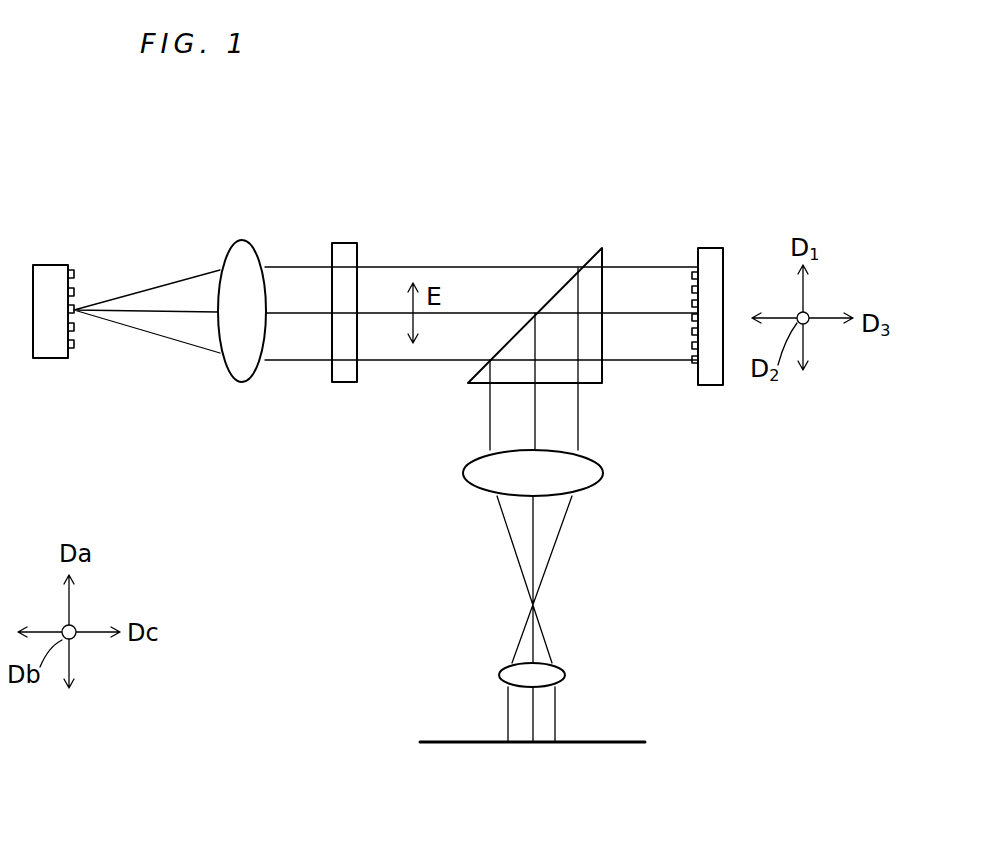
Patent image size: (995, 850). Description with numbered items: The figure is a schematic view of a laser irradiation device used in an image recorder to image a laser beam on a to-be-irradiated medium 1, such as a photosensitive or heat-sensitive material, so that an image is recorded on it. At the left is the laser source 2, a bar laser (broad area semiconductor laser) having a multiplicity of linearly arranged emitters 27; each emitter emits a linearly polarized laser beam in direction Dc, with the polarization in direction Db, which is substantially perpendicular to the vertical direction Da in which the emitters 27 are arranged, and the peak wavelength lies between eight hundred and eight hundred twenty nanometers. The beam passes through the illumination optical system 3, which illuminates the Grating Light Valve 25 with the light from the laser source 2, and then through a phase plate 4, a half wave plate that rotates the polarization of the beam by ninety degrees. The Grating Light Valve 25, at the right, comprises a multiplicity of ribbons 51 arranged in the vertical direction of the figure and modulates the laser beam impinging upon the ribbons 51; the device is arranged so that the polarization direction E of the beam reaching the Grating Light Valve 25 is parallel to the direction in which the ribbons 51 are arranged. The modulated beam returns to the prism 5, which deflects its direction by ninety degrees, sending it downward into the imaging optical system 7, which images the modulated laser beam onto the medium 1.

The to-be-irradiated medium 1 is at (617, 745).
The laser source 2 is at (47, 350).
The emitters 27 is at (74, 272).
The illumination optical system 3 is at (245, 372).
The phase plate 4 is at (347, 372).
The prism 5 is at (590, 378).
The imaging optical system 7 is at (627, 468).
The Grating Light Valve 25 is at (712, 383).
The ribbons 51 is at (697, 272).